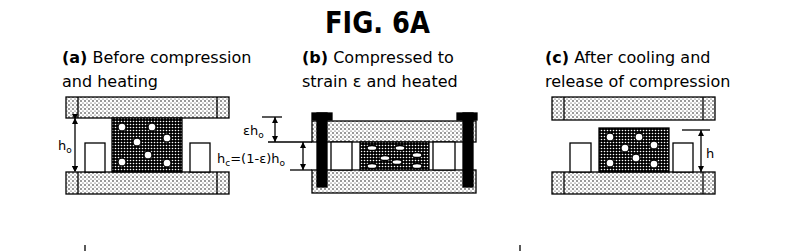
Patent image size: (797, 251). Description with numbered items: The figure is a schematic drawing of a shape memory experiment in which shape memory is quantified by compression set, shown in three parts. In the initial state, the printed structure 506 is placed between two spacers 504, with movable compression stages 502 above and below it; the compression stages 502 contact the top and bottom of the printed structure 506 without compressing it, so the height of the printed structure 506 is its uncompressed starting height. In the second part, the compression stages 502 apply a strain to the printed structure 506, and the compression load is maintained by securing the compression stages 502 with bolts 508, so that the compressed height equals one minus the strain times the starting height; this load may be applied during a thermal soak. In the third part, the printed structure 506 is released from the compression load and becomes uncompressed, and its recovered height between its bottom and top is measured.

The compression stage 502 is at (229, 109).
The spacer 504 is at (85, 157).
The printed structure 506 is at (112, 130).
The bolt 508 is at (462, 116).